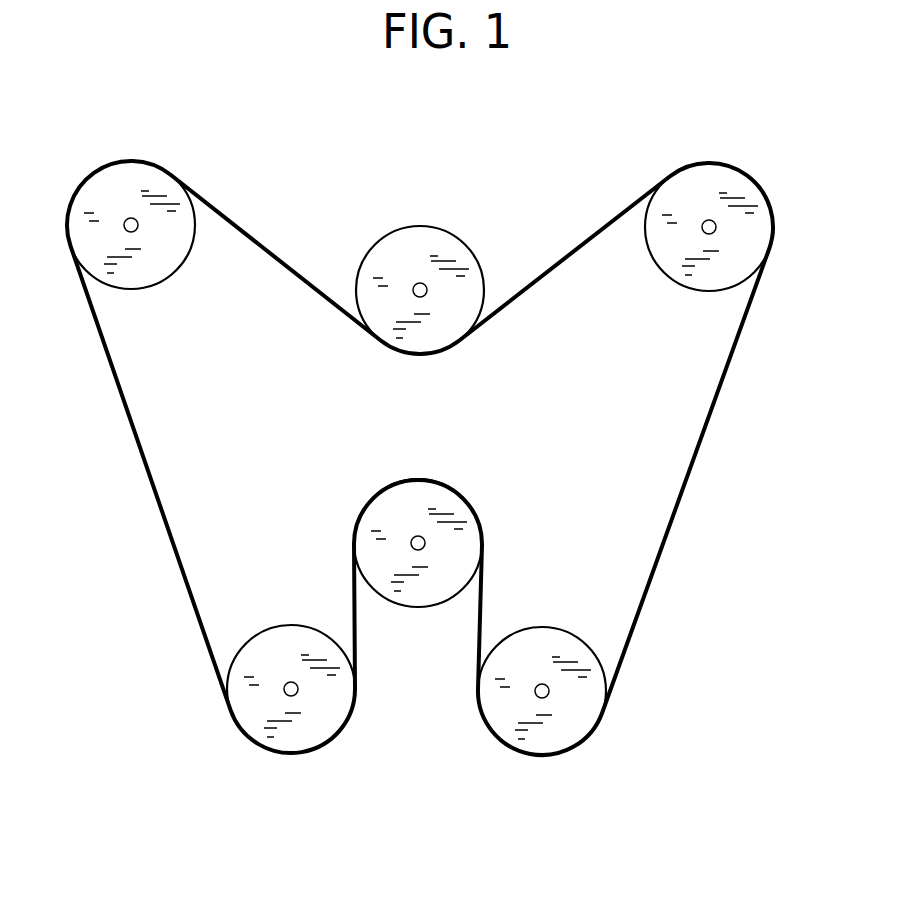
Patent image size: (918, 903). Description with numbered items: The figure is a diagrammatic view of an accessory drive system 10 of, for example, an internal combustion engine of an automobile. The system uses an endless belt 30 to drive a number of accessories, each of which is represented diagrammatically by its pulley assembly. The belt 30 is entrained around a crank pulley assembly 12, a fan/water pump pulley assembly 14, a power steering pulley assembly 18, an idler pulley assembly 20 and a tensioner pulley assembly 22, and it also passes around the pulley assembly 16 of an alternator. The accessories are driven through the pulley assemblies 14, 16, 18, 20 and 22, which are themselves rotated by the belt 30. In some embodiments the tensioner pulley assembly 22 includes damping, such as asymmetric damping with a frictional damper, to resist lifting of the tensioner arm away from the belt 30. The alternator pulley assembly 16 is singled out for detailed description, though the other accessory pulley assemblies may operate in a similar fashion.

The accessory drive system 10 is at (379, 150).
The crank pulley assembly 12 is at (300, 743).
The fan/water pump pulley assembly 14 is at (446, 503).
The pulley assembly of an alternator 16 is at (588, 720).
The power steering pulley assembly 18 is at (717, 172).
The idler pulley assembly 20 is at (429, 238).
The tensioner pulley assembly 22 is at (142, 177).
The endless belt 30 is at (675, 512).